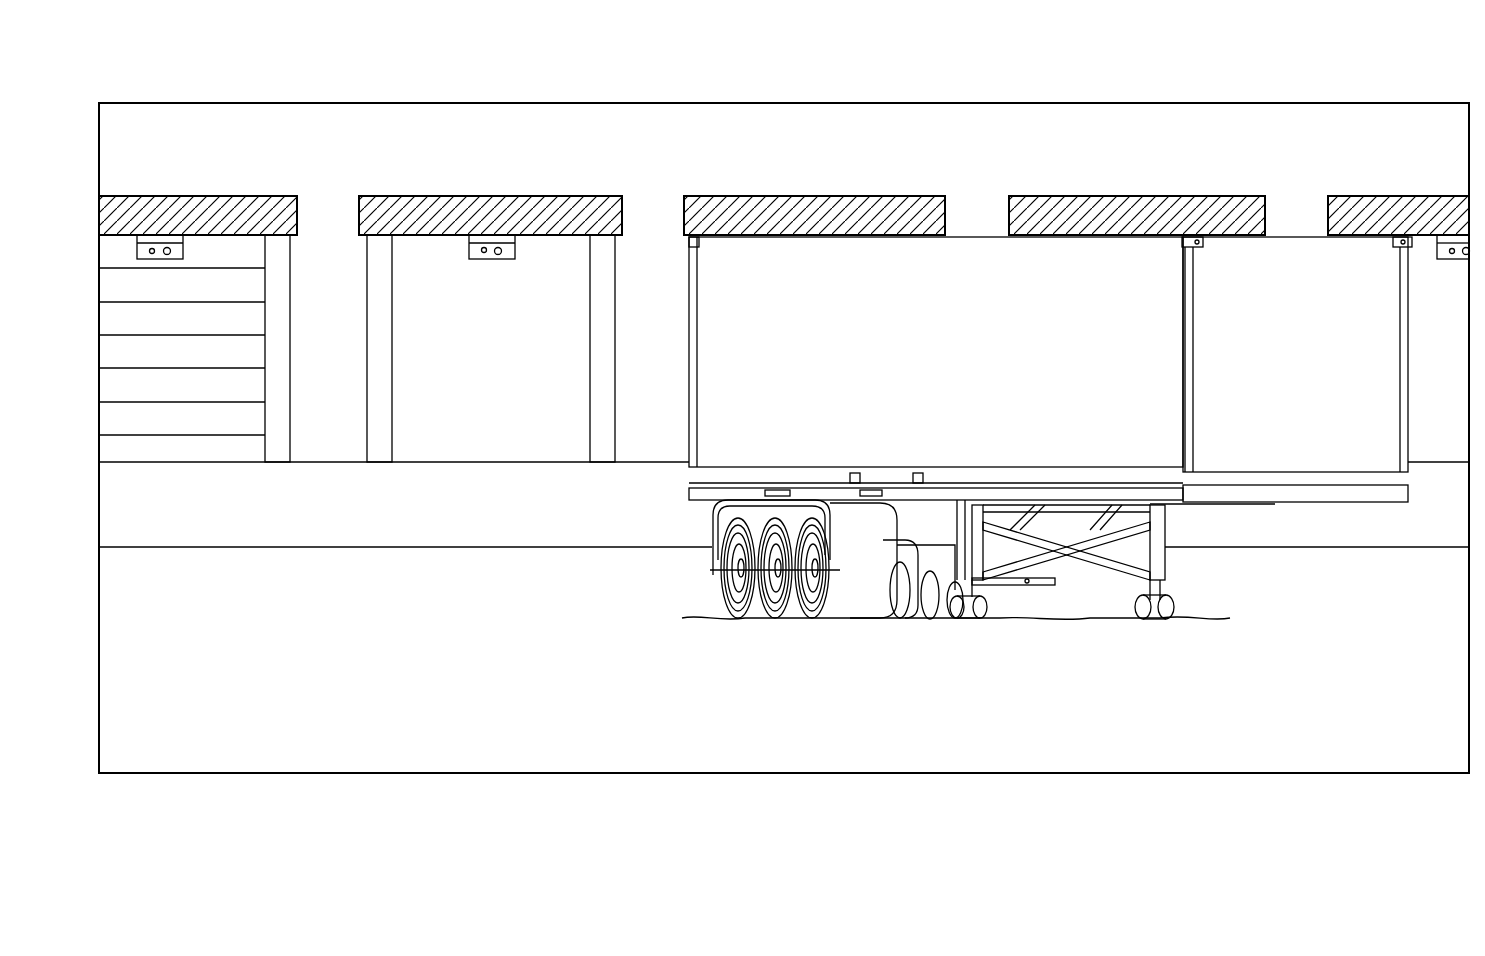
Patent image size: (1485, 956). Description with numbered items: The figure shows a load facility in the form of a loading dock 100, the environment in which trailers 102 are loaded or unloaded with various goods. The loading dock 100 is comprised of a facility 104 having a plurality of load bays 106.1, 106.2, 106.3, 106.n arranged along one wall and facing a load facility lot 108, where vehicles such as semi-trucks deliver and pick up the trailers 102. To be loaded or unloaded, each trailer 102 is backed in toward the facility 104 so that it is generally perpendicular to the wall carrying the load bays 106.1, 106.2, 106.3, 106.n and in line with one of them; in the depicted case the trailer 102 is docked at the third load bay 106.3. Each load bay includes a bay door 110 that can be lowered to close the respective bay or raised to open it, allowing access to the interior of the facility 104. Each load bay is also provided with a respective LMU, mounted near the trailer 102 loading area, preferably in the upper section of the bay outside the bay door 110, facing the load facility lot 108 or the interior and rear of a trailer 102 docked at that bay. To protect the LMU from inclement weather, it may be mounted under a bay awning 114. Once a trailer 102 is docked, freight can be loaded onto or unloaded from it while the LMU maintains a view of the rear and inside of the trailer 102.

The loading dock 100 is at (183, 65).
The trailer 102 is at (1097, 315).
The facility 104 is at (1050, 118).
The load bay 106.1 is at (200, 317).
The load bay 106.2 is at (490, 294).
The load bay 106.3 is at (925, 186).
The load bay 106.n is at (1387, 192).
The load facility lot 108 is at (259, 655).
The bay door 110 is at (200, 437).
The bay awning 114 is at (150, 212).